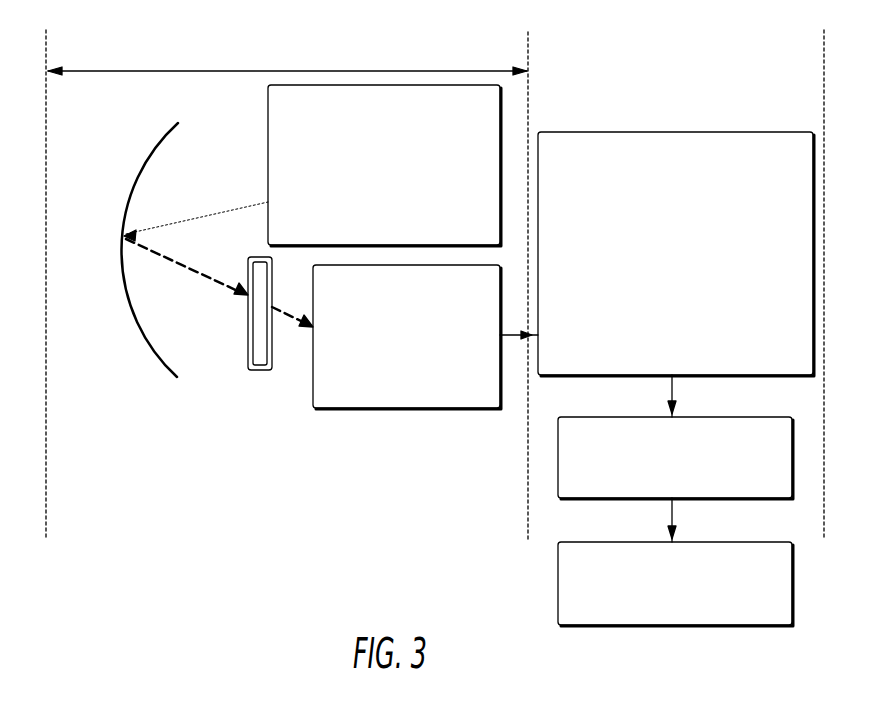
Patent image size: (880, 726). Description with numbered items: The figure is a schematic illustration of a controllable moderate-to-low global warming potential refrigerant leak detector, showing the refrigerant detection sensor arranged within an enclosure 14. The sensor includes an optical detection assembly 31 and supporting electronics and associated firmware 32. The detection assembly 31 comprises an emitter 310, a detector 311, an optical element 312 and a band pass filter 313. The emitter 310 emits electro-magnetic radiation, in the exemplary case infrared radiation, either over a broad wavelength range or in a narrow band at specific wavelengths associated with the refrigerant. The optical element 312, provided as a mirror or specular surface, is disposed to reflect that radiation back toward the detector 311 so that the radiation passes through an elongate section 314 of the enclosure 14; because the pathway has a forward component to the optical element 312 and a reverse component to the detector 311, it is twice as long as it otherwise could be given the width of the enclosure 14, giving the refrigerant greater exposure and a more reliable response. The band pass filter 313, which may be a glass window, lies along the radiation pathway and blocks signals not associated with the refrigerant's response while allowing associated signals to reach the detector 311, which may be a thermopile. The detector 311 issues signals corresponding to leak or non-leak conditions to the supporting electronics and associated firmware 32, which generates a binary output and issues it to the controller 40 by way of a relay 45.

The enclosure 14 is at (46, 477).
The optical detection assembly 31 is at (299, 59).
The emitter 310 is at (402, 160).
The detector 311 is at (423, 339).
The optical element 312 is at (123, 203).
The band pass filter 313 is at (259, 370).
The elongate section 314 is at (166, 71).
The supporting electronics and associated firmware 32 is at (689, 264).
The relay 45 is at (689, 467).
The controller 40 is at (689, 592).